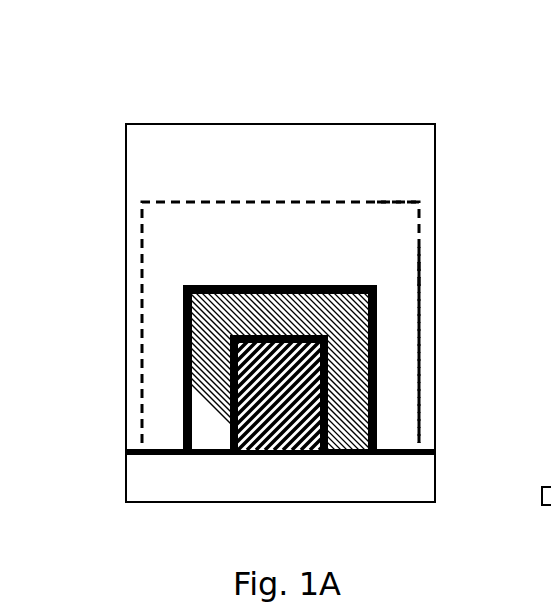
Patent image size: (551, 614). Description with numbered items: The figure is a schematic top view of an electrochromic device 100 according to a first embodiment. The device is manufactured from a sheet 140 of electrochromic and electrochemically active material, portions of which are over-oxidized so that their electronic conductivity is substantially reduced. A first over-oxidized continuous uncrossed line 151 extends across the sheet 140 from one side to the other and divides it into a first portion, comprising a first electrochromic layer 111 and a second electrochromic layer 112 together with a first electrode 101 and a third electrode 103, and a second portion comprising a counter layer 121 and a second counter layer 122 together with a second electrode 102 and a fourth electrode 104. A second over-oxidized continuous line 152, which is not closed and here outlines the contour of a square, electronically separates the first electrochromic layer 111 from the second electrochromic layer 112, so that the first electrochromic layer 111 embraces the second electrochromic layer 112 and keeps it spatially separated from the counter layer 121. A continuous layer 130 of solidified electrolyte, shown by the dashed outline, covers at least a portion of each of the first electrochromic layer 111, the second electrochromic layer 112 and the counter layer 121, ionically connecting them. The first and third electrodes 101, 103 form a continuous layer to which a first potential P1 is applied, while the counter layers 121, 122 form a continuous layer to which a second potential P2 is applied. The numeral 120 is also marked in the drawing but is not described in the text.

The electrochromic device 100 is at (133, 65).
The first electrode 101 is at (156, 479).
The second electrode 102 is at (167, 166).
The third electrode 103 is at (387, 479).
The fourth electrode 104 is at (393, 150).
The first electrochromic layer 111 is at (207, 374).
The second electrochromic layer 112 is at (313, 405).
The encapsulant 120 is at (167, 259).
The counter layer 121 is at (373, 270).
The second counter layer 122 is at (387, 230).
The continuous layer of solidified electrolyte 130 is at (153, 214).
The sheet of electrochromic and electrochemically active material 140 is at (428, 268).
The first over-oxidized line 151 is at (186, 314).
The second over-oxidized line 152 is at (325, 352).
The first potential P1 is at (232, 477).
The second potential P2 is at (265, 150).